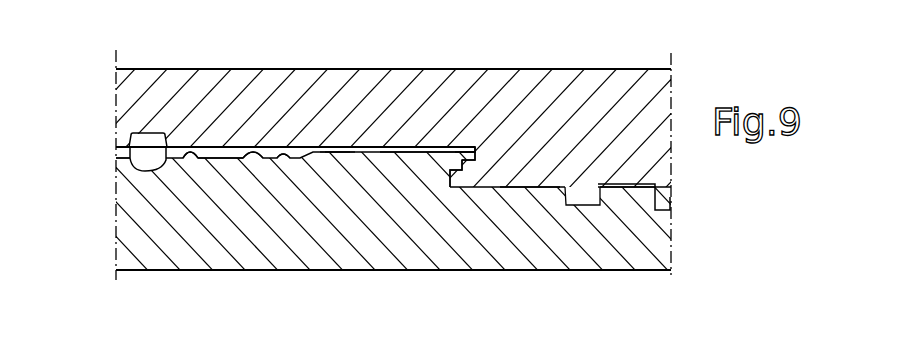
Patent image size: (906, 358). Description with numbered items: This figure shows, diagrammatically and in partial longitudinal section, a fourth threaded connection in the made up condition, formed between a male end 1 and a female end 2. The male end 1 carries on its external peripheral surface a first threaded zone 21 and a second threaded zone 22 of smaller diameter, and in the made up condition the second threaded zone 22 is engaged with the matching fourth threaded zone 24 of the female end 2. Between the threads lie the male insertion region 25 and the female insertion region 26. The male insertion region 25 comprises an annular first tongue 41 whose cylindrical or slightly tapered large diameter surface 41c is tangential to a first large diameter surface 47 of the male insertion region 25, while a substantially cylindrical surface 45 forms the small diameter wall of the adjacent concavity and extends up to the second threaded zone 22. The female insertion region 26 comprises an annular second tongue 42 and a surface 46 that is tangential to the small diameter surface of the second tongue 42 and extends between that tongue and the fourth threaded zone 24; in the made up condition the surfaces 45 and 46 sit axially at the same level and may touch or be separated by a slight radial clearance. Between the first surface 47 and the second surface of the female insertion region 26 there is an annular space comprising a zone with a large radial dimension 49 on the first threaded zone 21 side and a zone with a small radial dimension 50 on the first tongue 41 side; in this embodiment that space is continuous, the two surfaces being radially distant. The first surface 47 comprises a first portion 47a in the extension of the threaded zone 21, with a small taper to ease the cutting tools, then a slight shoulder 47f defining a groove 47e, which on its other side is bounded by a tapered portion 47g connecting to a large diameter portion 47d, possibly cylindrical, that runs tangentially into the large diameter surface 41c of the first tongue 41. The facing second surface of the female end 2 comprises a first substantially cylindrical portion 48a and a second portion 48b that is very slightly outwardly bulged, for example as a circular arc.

The male end 1 is at (100, 232).
The female end 2 is at (100, 86).
The first threaded zone 21 is at (116, 170).
The second threaded zone 22 is at (637, 200).
The fourth threaded zone 24 is at (660, 197).
The male insertion region 25 is at (424, 255).
The female insertion region 26 is at (593, 135).
The first tongue 41 is at (480, 162).
The large diameter surface 41c is at (472, 152).
The second tongue 42 is at (452, 170).
The cylindrical surface 45 is at (553, 188).
The surface 46 is at (527, 180).
The first large diameter surface 47 is at (313, 147).
The first portion 47a is at (188, 163).
The large diameter portion 47d is at (424, 147).
The groove 47e is at (258, 160).
The slight shoulder 47f is at (225, 158).
The tapered portion 47g is at (280, 158).
The first substantially cylindrical portion 48a is at (190, 147).
The second portion 48b is at (337, 168).
The zone with a large radial dimension 49 is at (245, 147).
The zone with a small radial dimension 50 is at (338, 165).